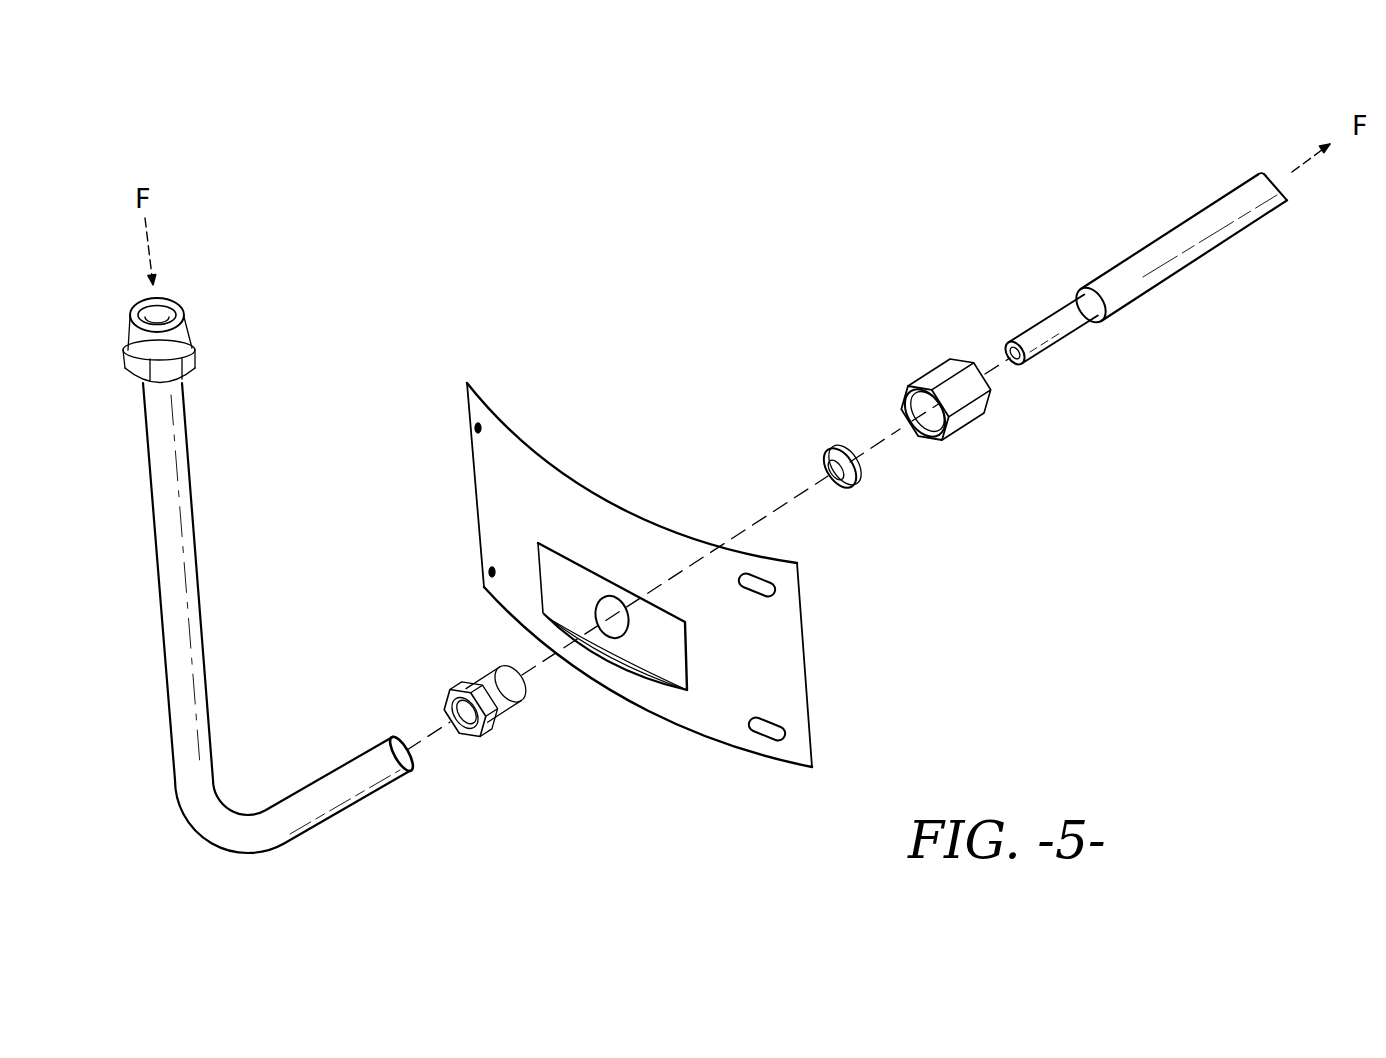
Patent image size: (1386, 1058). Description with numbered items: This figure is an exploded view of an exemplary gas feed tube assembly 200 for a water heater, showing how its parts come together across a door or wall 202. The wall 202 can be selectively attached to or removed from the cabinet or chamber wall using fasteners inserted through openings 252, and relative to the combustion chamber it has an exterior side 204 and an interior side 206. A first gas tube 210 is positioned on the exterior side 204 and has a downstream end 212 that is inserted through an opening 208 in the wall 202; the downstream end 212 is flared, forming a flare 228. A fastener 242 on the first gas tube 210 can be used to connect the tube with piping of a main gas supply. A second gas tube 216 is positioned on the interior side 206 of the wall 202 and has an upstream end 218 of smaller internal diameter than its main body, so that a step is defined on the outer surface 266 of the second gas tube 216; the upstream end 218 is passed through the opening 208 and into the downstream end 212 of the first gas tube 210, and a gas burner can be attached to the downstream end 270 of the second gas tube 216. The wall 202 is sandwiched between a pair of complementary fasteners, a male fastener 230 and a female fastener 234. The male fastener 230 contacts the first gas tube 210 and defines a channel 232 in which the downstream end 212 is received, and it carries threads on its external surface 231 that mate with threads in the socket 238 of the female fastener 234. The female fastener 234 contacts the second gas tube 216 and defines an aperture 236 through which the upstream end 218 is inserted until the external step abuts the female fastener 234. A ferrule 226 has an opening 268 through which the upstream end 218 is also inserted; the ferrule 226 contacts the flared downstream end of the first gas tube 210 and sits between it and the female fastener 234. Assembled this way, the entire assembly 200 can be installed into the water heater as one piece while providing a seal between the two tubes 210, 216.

The gas feed tube assembly 200 is at (615, 288).
The door or wall 202 is at (638, 596).
The exterior side 204 is at (748, 758).
The interior side 206 is at (777, 557).
The opening 208 is at (600, 632).
The first gas tube 210 is at (295, 822).
The downstream end 212 is at (398, 782).
The second gas tube 216 is at (1182, 223).
The upstream end 218 is at (1057, 327).
The ferrule 226 is at (805, 438).
The flare 228 is at (402, 727).
The male fastener 230 is at (486, 718).
The external surface 231 is at (513, 720).
The channel 232 is at (457, 730).
The female fastener 234 is at (960, 417).
The aperture 236 is at (976, 408).
The socket 238 is at (917, 440).
The fastener 242 is at (180, 324).
The openings 252 is at (480, 430).
The outer surface 266 is at (1224, 188).
The opening 268 is at (818, 472).
The downstream end 270 is at (1282, 217).